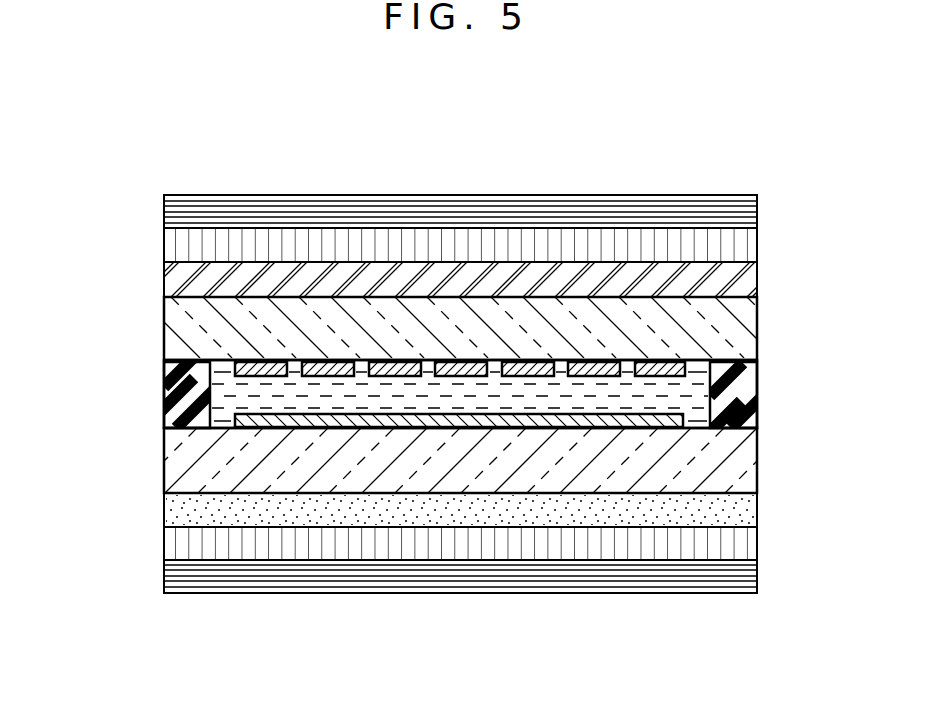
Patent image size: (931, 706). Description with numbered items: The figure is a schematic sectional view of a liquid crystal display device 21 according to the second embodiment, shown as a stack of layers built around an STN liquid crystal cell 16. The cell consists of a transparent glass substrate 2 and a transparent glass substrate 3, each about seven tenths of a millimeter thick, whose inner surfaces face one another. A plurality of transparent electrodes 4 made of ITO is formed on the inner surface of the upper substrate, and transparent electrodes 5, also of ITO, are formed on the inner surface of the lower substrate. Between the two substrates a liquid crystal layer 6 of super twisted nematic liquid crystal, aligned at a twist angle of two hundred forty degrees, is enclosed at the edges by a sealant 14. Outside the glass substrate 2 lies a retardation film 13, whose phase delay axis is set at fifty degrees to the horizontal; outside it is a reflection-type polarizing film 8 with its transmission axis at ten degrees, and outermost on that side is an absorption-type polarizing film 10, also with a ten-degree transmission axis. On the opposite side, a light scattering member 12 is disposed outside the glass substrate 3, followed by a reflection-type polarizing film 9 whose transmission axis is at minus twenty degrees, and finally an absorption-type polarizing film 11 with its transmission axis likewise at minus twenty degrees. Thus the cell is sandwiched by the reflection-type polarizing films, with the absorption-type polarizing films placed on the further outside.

The liquid crystal display device 21 is at (167, 175).
The absorption-type polarizing film 10 is at (742, 213).
The reflection-type polarizing film 8 is at (738, 250).
The retardation film 13 is at (745, 287).
The transparent glass substrate 2 is at (745, 330).
The STN liquid crystal cell 16 is at (152, 298).
The sealant 14 is at (190, 412).
The transparent electrodes 4 is at (680, 375).
The transparent electrodes 5 is at (683, 419).
The liquid crystal layer 6 is at (445, 400).
The transparent glass substrate 3 is at (740, 468).
The light scattering member 12 is at (740, 515).
The reflection-type polarizing film 9 is at (742, 545).
The absorption-type polarizing film 11 is at (745, 582).